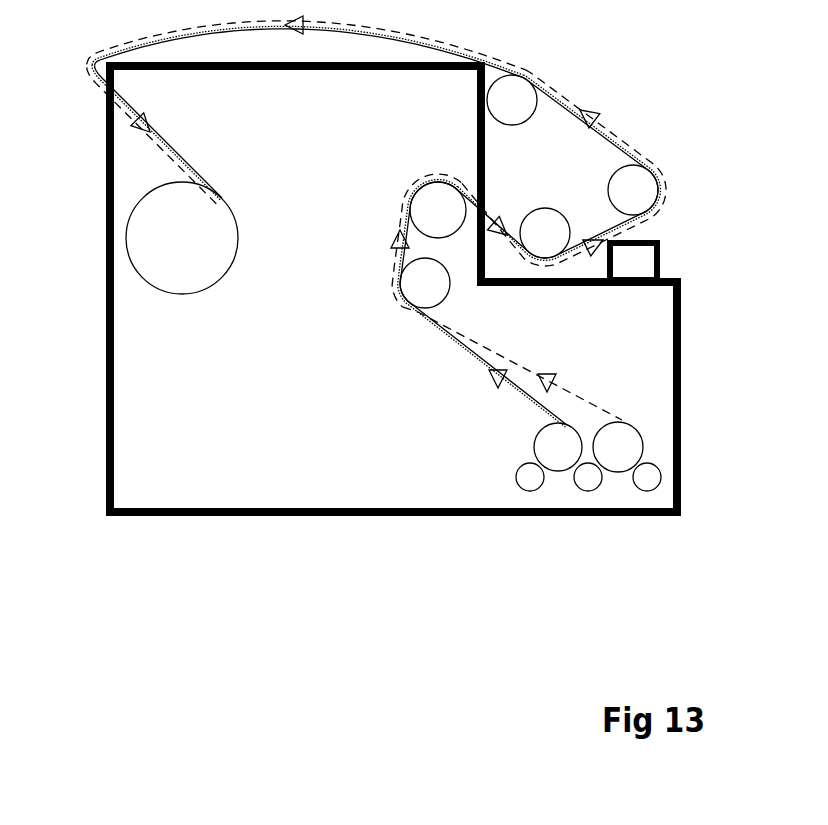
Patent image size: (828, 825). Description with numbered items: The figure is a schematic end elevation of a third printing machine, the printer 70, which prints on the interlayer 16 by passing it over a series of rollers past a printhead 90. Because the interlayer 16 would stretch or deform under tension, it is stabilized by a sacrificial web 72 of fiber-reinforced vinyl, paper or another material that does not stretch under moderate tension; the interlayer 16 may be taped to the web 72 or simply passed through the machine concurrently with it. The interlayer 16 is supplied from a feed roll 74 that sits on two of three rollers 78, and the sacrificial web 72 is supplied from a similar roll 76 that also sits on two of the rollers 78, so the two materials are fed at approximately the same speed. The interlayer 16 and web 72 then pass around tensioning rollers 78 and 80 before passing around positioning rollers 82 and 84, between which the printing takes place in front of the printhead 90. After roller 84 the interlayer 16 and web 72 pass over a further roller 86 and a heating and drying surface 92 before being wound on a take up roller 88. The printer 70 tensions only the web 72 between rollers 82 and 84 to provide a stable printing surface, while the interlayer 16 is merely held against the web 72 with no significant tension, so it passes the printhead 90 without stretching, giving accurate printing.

The interlayer 16 is at (585, 400).
The printer 70 is at (245, 485).
The sacrificial web 72 is at (377, 221).
The feed roll 74 is at (623, 447).
The roll 76 is at (550, 443).
The rollers 78 is at (415, 283).
The tensioning roller 80 is at (433, 202).
The positioning roller 82 is at (548, 222).
The positioning roller 84 is at (640, 187).
The further roller 86 is at (518, 95).
The take up roller 88 is at (152, 232).
The printhead 90 is at (658, 244).
The heating and drying surface 92 is at (268, 50).